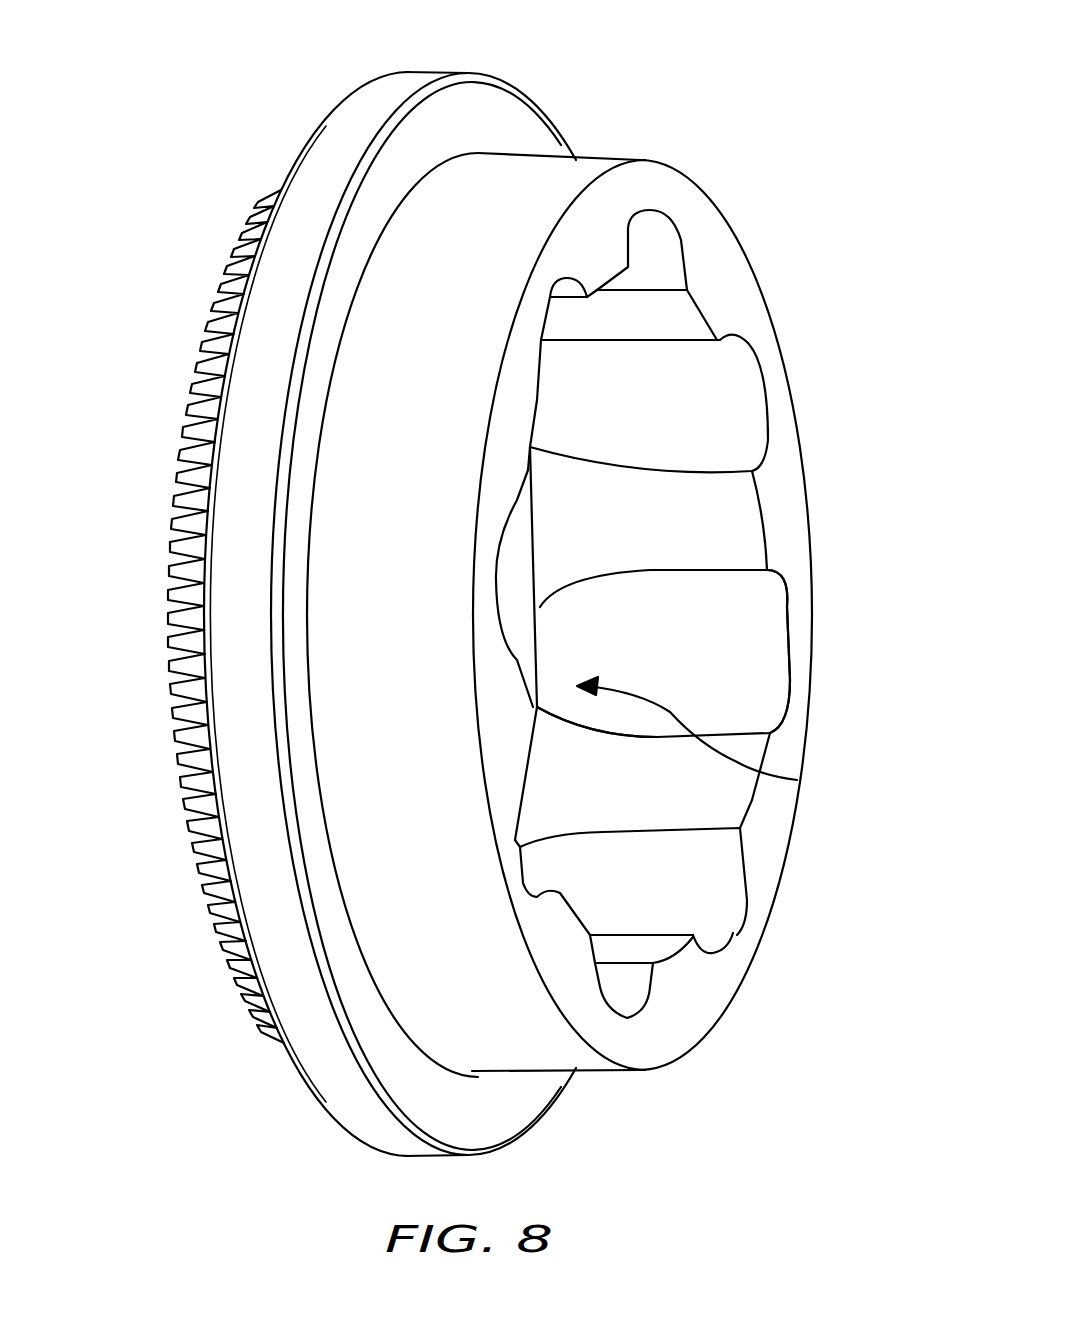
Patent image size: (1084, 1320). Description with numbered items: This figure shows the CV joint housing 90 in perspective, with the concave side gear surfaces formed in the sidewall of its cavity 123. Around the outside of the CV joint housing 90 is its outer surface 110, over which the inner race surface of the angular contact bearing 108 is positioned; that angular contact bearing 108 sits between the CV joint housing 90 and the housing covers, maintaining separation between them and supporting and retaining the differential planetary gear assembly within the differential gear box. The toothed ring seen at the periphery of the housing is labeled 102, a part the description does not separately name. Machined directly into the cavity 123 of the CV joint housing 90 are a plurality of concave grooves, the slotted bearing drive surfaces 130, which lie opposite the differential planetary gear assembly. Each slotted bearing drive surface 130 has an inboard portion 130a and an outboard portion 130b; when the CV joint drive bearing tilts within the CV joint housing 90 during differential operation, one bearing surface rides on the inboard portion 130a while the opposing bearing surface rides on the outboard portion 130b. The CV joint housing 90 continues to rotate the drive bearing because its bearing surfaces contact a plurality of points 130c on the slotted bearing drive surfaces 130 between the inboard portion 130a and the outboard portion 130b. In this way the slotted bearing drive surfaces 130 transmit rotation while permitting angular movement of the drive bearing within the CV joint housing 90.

The CV joint housing 90 is at (805, 252).
The ring gear 102 is at (185, 470).
The angular contact bearing 108 is at (412, 82).
The outer surface 110 is at (385, 550).
The cavity 123 is at (722, 743).
The slotted bearing drive surfaces 130 is at (660, 242).
The inboard portion 130a is at (540, 653).
The outboard portion 130b is at (787, 650).
The points 130c is at (700, 643).